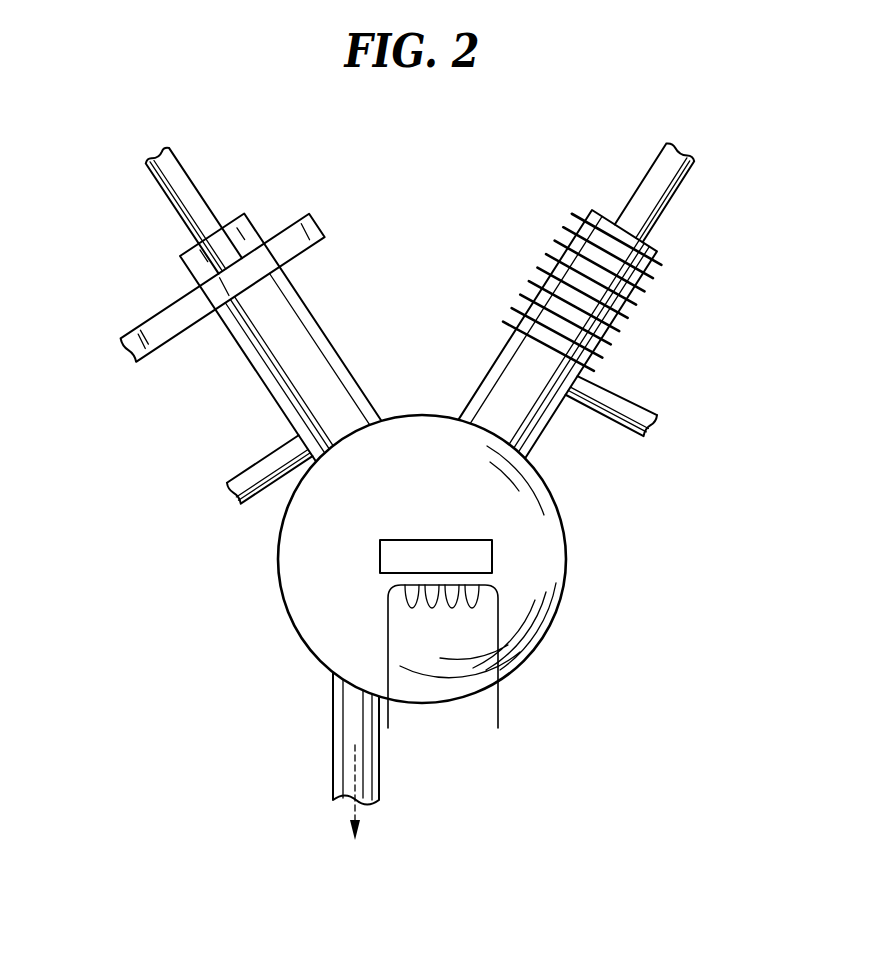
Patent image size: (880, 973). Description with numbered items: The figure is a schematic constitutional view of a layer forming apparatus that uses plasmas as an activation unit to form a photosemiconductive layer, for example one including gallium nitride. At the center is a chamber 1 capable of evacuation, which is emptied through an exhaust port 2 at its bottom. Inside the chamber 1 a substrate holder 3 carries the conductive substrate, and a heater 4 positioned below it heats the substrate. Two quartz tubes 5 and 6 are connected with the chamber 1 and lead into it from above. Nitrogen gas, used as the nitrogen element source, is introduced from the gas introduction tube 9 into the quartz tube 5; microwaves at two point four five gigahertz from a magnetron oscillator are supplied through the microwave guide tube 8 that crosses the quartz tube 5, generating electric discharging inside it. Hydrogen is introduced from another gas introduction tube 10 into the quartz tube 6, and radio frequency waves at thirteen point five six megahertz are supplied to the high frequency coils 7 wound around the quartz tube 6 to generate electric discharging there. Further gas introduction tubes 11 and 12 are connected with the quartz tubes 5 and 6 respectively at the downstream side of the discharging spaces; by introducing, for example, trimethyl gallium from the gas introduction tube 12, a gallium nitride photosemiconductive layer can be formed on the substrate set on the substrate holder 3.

The chamber 1 is at (562, 520).
The exhaust port 2 is at (333, 733).
The substrate holder 3 is at (430, 538).
The heater 4 is at (388, 640).
The quartz tube 5 is at (242, 354).
The quartz tube 6 is at (651, 254).
The high frequency coils 7 is at (553, 242).
The microwave guide tube 8 is at (163, 312).
The gas introduction tube 9 is at (189, 178).
The gas introduction tube 10 is at (647, 172).
The gas introduction tube 11 is at (240, 468).
The gas introduction tube 12 is at (641, 405).